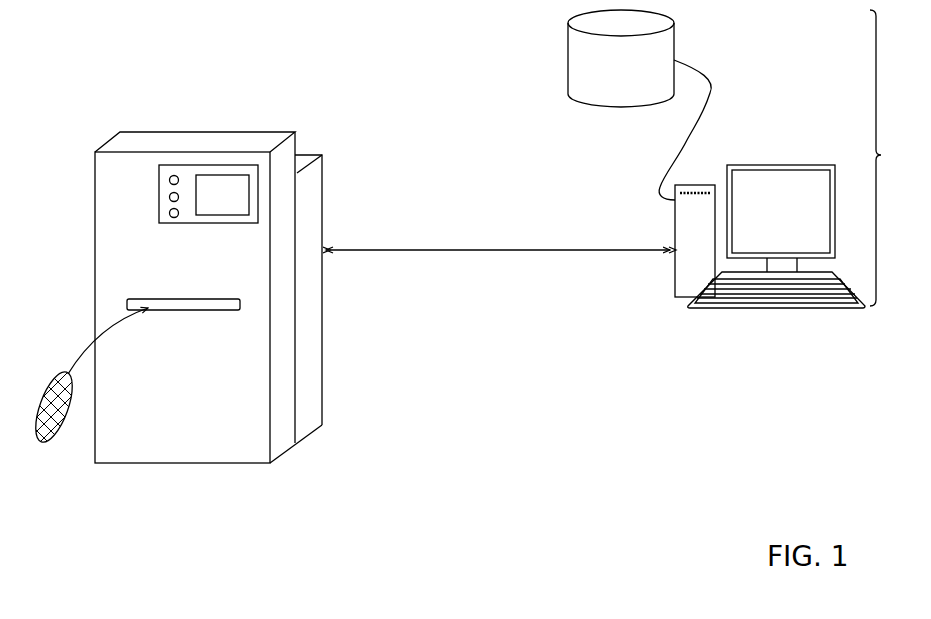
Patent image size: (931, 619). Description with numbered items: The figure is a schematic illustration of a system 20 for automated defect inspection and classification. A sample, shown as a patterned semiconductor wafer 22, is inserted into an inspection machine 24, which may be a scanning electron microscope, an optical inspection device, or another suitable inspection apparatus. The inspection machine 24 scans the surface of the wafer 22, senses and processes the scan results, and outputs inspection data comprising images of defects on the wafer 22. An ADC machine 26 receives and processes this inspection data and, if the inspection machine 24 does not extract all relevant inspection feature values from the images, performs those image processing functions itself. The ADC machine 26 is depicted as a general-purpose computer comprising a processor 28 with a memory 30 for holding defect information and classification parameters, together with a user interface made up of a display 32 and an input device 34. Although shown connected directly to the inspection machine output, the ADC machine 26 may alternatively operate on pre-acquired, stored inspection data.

The system 20 is at (96, 77).
The patterned semiconductor wafer 22 is at (42, 442).
The inspection machine 24 is at (208, 132).
The ADC machine 26 is at (888, 158).
The processor 28 is at (675, 285).
The memory 30 is at (567, 62).
The display 32 is at (775, 165).
The input device 34 is at (842, 308).